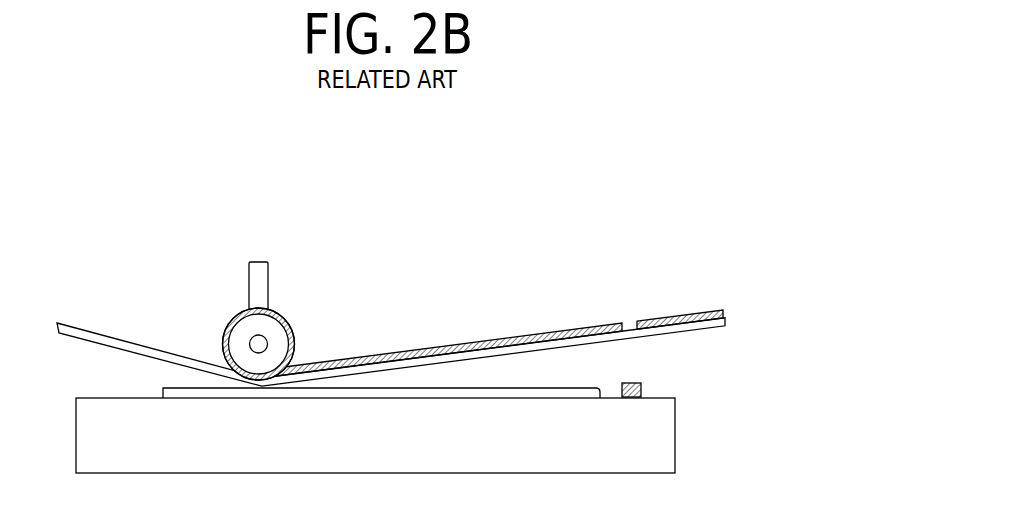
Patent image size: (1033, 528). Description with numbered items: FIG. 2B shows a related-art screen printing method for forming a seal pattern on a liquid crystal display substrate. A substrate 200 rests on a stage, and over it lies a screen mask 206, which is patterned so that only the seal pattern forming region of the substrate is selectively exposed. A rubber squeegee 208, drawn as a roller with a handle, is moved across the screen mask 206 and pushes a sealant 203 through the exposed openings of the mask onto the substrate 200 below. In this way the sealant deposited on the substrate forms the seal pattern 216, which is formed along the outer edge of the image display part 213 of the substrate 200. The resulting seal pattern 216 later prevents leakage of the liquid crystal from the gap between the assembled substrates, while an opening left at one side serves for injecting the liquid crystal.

The substrate 200 is at (653, 442).
The sealant 203 is at (687, 312).
The screen mask 206 is at (725, 318).
The rubber squeegee 208 is at (273, 331).
The image display part 213 is at (597, 391).
The seal pattern 216 is at (642, 387).